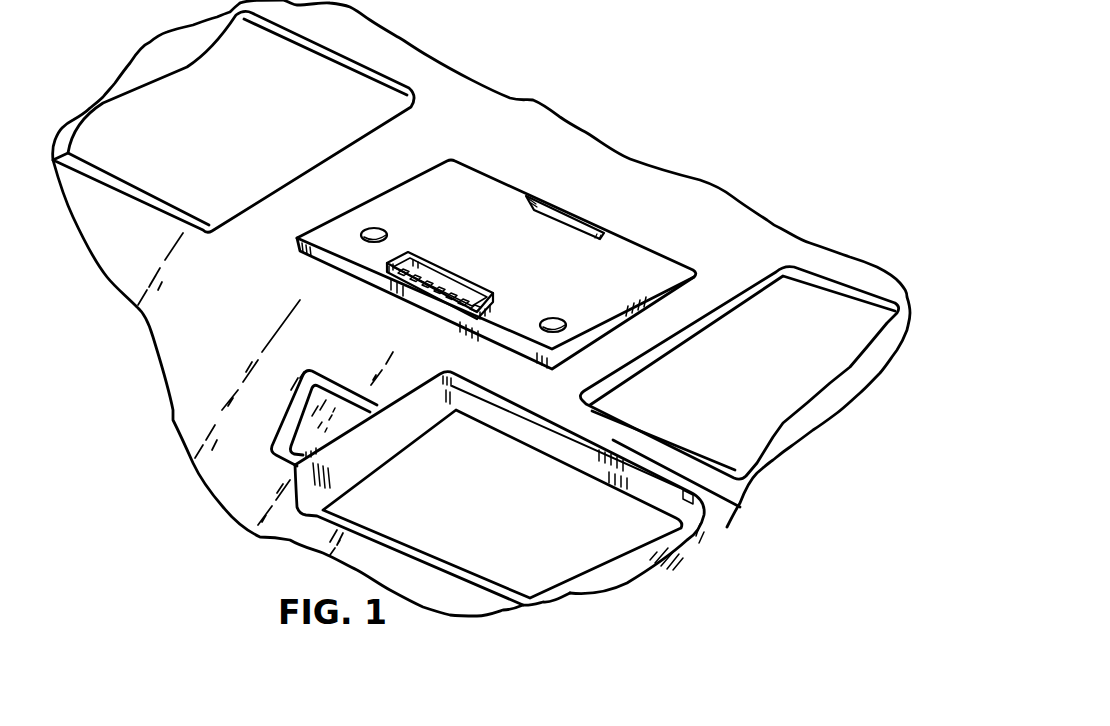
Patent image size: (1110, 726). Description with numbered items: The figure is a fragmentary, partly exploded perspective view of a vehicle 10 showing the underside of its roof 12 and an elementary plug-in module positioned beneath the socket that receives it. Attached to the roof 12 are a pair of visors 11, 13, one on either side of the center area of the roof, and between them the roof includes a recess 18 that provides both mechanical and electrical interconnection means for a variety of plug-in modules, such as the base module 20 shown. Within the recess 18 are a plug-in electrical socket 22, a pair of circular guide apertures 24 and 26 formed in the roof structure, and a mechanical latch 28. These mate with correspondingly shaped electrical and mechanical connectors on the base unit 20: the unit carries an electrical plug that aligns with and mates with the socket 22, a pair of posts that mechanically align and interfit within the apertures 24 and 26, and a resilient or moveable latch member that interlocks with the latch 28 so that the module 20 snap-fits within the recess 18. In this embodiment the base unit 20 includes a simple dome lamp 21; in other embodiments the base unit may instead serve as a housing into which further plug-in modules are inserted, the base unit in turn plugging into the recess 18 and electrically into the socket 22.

The vehicle 10 is at (481, 308).
The visor 11 is at (258, 126).
The roof 12 is at (522, 123).
The visor 13 is at (757, 379).
The recess 18 is at (590, 268).
The base module 20 is at (706, 517).
The dome lamp 21 is at (515, 529).
The plug-in electrical socket 22 is at (473, 283).
The guide aperture 24 is at (381, 240).
The guide aperture 26 is at (563, 325).
The mechanical latch 28 is at (544, 213).